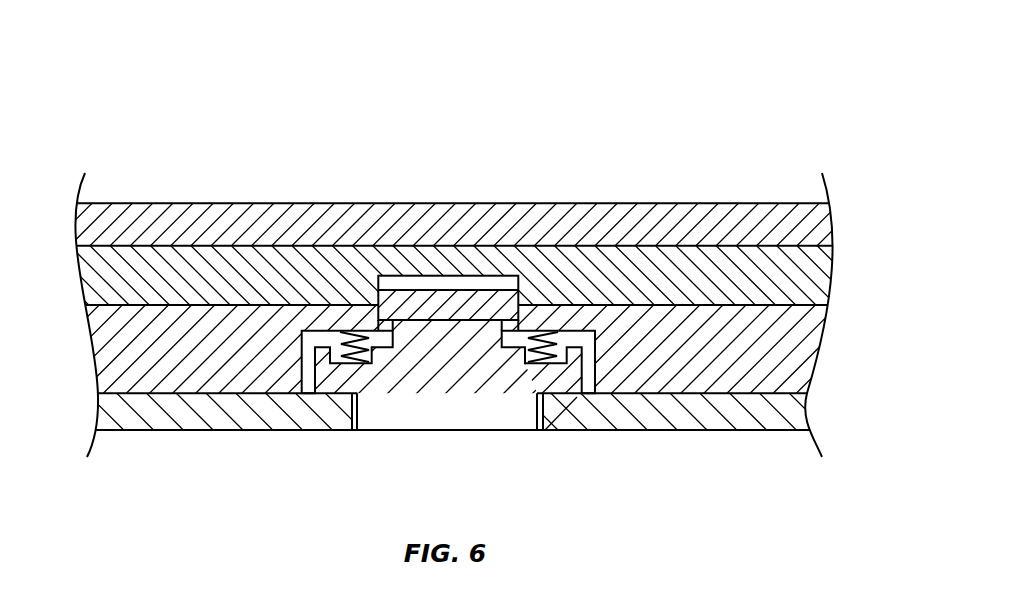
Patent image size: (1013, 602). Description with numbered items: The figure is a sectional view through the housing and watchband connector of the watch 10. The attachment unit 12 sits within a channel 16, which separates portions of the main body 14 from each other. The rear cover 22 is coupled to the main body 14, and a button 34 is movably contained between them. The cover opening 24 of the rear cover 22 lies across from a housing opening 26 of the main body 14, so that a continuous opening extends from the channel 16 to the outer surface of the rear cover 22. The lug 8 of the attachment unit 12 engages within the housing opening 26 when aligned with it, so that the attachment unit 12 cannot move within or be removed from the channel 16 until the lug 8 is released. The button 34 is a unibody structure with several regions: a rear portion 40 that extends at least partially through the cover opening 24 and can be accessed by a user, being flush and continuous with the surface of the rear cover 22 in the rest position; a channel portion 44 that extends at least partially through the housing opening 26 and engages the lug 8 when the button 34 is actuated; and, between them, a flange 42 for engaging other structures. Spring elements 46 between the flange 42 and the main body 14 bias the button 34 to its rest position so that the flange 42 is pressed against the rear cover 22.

The watch 10 is at (115, 96).
The main body 14 is at (93, 217).
The attachment unit 12 is at (813, 259).
The channel 16 is at (812, 302).
The lug 8 is at (446, 312).
The housing opening 26 is at (357, 331).
The channel portion 44 is at (488, 335).
The spring elements 46 is at (355, 331).
The button 34 is at (413, 432).
The rear portion 40 is at (503, 431).
The rear cover 22 is at (195, 432).
The cover opening 24 is at (365, 432).
The flange 42 is at (572, 388).